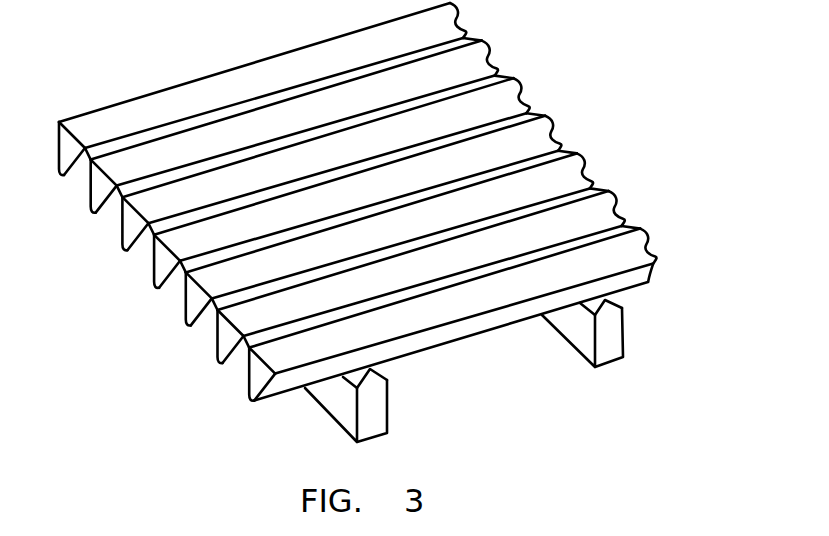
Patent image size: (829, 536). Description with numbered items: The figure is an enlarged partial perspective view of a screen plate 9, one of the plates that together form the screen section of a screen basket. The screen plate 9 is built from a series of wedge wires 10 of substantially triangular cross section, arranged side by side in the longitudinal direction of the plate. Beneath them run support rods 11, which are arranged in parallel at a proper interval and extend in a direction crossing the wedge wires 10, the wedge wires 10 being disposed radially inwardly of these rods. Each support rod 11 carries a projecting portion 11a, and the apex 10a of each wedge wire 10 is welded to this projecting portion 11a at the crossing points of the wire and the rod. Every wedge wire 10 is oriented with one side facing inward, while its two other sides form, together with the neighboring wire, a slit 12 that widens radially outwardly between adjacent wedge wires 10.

The screen plate 9 is at (545, 81).
The wedge wire 10 is at (198, 148).
The apex 10a is at (253, 405).
The support rod 11 is at (377, 422).
The projecting portion 11a is at (380, 372).
The slit 12 is at (238, 371).